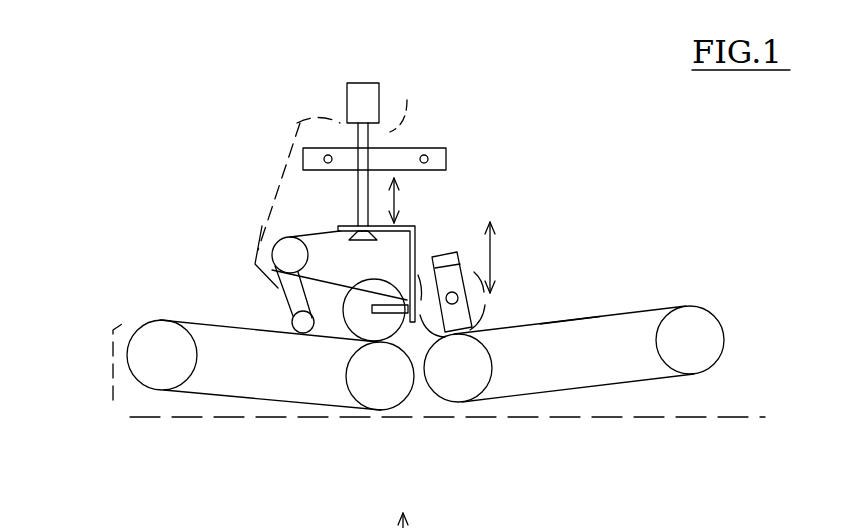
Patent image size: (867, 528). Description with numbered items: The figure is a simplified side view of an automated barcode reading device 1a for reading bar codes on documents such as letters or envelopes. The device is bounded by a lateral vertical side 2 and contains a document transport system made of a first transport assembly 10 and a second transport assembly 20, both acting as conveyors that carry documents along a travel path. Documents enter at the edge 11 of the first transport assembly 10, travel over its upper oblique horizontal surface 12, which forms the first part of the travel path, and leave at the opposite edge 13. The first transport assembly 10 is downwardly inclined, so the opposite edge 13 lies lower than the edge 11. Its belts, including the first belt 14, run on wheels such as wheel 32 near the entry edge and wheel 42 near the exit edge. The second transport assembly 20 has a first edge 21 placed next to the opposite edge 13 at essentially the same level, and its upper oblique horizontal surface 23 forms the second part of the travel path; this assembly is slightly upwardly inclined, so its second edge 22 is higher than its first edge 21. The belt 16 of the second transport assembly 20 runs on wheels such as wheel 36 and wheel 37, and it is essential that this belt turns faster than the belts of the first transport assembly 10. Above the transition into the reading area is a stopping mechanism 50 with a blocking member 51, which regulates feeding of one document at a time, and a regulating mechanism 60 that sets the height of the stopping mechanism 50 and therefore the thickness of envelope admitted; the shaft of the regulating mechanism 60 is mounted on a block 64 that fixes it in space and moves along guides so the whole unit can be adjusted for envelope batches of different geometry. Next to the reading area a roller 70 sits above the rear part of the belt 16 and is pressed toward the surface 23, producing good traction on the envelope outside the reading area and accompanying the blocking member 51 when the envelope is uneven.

The automated barcode reading device 1a is at (655, 293).
The lateral vertical side 2 is at (135, 418).
The first transport assembly 10 is at (238, 397).
The edge 11 is at (97, 333).
The upper oblique horizontal surface 12 is at (160, 316).
The opposite edge 13 is at (400, 413).
The first belt 14 is at (212, 322).
The belt 16 is at (545, 318).
The second transport assembly 20 is at (635, 382).
The first edge 21 is at (477, 402).
The second edge 22 is at (718, 310).
The upper oblique horizontal surface 23 is at (575, 312).
The wheel 32 is at (140, 375).
The wheel 36 is at (436, 390).
The wheel 37 is at (667, 367).
The wheel 42 is at (365, 398).
The stopping mechanism 50 is at (547, 195).
The blocking member 51 is at (357, 307).
The regulating mechanism 60 is at (389, 82).
The block 64 is at (446, 156).
The roller 70 is at (472, 270).